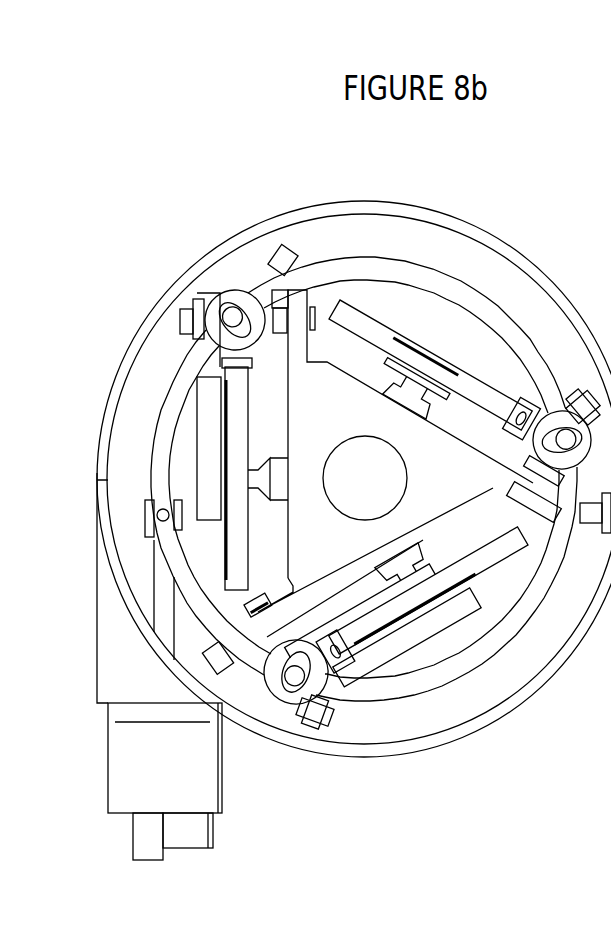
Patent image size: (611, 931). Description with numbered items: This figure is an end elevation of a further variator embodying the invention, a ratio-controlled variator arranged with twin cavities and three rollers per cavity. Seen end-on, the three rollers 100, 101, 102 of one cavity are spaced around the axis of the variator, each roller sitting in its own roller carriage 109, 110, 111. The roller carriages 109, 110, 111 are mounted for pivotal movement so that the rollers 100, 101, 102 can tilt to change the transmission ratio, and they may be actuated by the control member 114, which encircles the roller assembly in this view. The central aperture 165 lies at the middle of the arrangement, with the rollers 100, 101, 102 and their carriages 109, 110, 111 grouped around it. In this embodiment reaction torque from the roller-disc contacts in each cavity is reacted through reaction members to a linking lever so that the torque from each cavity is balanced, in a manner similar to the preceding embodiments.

The roller 100 is at (440, 354).
The roller 101 is at (233, 432).
The roller 102 is at (416, 583).
The roller carriage 109 is at (445, 357).
The roller carriage 110 is at (207, 448).
The roller carriage 111 is at (404, 633).
The control member 114 is at (500, 633).
The central aperture 165 is at (396, 478).